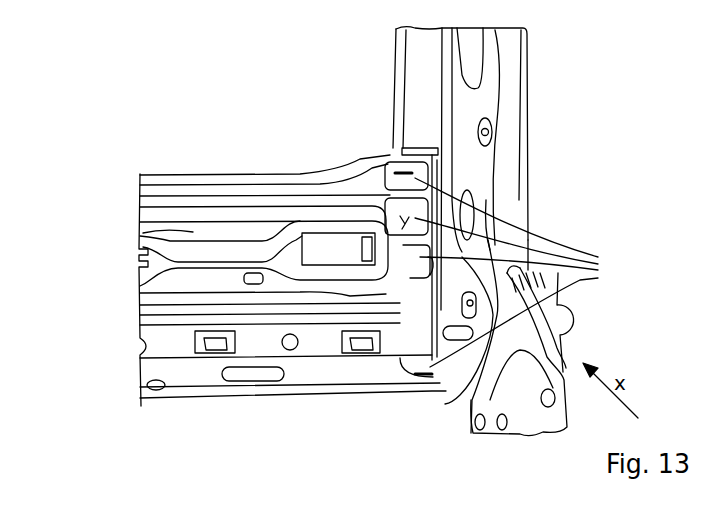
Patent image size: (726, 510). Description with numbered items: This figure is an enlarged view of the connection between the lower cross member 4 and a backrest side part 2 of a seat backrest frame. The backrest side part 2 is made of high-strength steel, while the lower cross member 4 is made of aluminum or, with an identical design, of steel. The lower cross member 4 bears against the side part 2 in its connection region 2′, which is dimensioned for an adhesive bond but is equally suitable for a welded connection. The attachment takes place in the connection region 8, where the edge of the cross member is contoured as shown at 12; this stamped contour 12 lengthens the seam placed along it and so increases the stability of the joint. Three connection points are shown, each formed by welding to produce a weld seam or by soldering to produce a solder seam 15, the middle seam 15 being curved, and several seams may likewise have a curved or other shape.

The backrest side part 2 is at (514, 90).
The connection region of the side member 2′ is at (435, 173).
The lower cross member 4 is at (178, 249).
The connection region 8 is at (549, 209).
The contoured edge 12 is at (523, 272).
The weld seam 15 is at (403, 218).